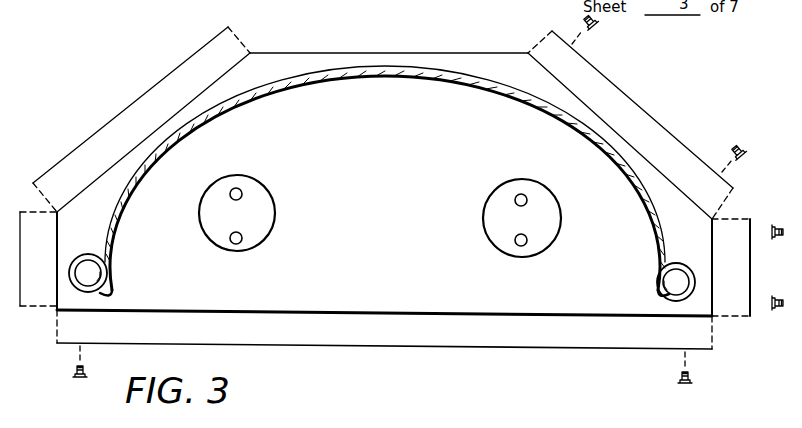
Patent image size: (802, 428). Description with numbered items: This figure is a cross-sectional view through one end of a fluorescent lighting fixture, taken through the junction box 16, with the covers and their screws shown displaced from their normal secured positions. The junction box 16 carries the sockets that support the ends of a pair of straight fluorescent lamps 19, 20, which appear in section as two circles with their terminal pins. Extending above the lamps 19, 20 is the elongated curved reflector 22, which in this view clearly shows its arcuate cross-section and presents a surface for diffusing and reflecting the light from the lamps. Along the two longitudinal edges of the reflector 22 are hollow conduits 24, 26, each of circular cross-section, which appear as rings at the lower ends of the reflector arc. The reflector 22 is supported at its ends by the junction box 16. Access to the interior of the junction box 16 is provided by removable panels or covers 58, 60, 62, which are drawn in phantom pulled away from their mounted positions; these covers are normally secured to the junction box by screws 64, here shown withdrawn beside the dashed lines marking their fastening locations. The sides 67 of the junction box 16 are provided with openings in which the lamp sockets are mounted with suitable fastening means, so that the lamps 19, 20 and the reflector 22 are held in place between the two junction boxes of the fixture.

The junction box 16 is at (296, 53).
The fluorescent lamp 19 is at (276, 206).
The fluorescent lamp 20 is at (562, 220).
The reflector 22 is at (470, 88).
The conduit 24 is at (90, 293).
The conduit 26 is at (677, 300).
The cover 58 is at (632, 101).
The cover 60 is at (752, 263).
The cover 62 is at (445, 349).
The screw 64 is at (598, 23).
The side of the junction box 67 is at (358, 288).